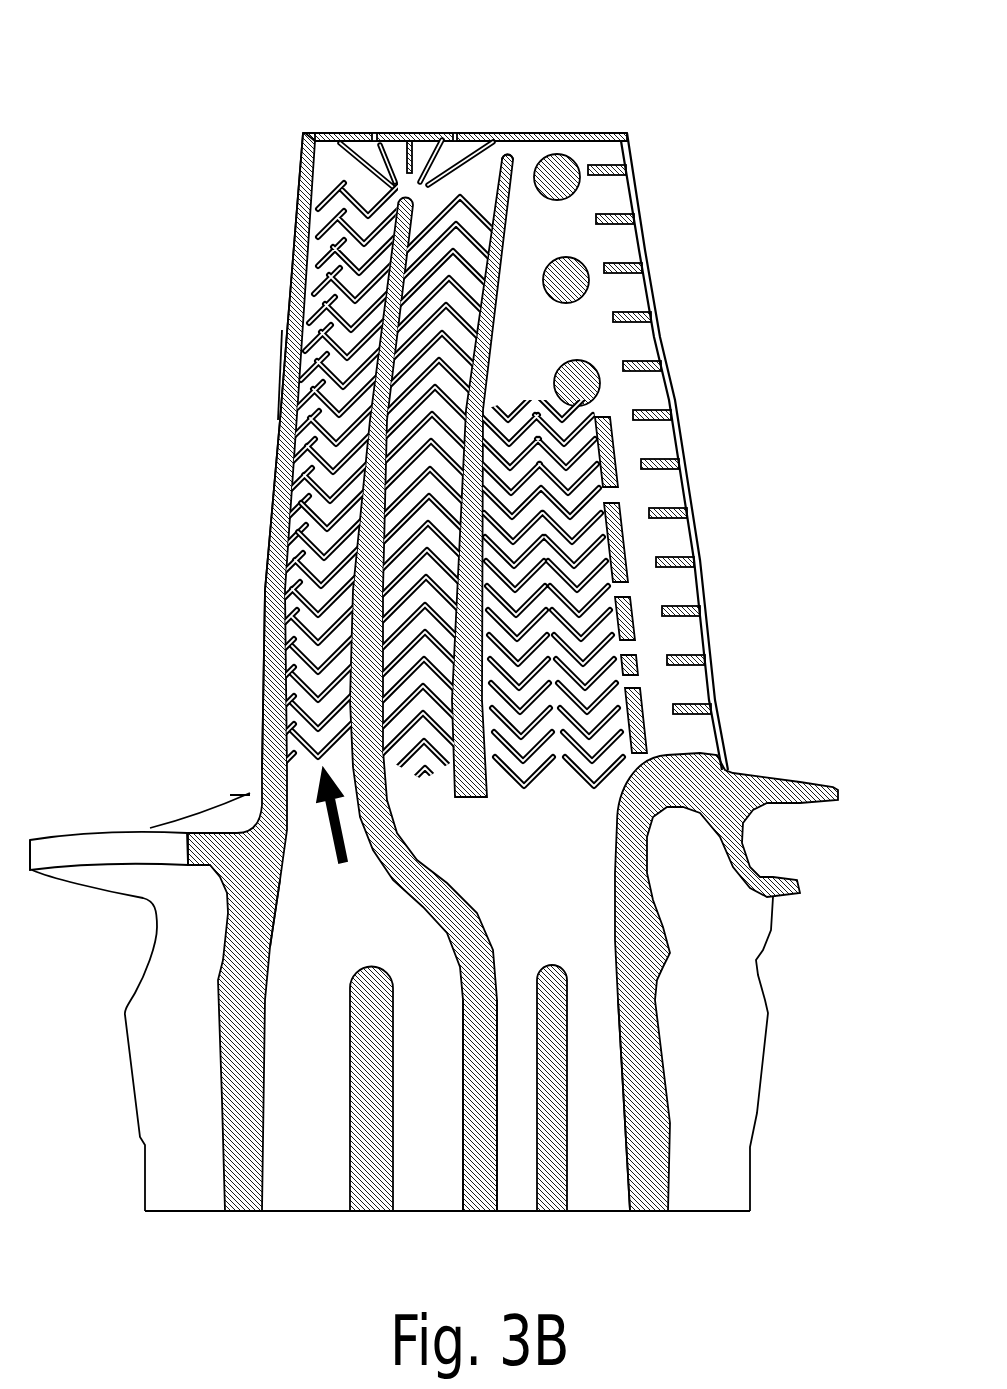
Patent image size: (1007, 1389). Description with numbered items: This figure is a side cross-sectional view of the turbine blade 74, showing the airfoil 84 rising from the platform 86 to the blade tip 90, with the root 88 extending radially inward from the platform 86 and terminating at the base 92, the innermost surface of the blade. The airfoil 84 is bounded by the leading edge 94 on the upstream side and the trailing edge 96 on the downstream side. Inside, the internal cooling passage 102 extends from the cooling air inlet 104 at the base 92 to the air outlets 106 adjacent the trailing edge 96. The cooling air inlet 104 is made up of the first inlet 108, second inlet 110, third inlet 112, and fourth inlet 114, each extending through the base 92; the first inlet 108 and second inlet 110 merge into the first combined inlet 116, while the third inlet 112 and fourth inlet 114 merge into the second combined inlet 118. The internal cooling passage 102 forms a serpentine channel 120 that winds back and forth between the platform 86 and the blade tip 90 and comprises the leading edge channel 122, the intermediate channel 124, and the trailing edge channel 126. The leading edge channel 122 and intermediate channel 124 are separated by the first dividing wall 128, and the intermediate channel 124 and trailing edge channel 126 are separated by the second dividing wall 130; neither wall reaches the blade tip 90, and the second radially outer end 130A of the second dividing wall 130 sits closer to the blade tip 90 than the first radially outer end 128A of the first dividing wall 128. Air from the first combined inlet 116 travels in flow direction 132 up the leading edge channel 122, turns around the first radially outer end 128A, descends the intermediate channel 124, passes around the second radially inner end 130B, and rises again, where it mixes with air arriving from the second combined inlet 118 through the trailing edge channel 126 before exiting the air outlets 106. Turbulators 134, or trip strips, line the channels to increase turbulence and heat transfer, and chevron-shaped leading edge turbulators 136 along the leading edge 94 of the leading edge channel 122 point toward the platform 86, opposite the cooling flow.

The turbine blade 74 is at (134, 142).
The airfoil 84 is at (300, 212).
The platform 86 is at (183, 810).
The root 88 is at (730, 1070).
The blade tip 90 is at (340, 133).
The base 92 is at (197, 1217).
The leading edge 94 is at (265, 633).
The trailing edge 96 is at (690, 470).
The internal cooling passage 102 is at (300, 290).
The cooling air inlet 104 is at (480, 1238).
The air outlets 106 is at (662, 338).
The first inlet 108 is at (292, 1045).
The second inlet 110 is at (425, 1110).
The third inlet 112 is at (515, 1180).
The fourth inlet 114 is at (598, 1147).
The first combined inlet 116 is at (313, 930).
The second combined inlet 118 is at (587, 943).
The serpentine channel 120 is at (572, 158).
The leading edge channel 122 is at (333, 688).
The intermediate channel 124 is at (447, 712).
The trailing edge channel 126 is at (613, 645).
The first dividing wall 128 is at (365, 563).
The first radially outer end 128A is at (405, 197).
The second dividing wall 130 is at (467, 607).
The second radially outer end 130A is at (497, 190).
The second radially inner end 130B is at (467, 797).
The flow direction 132 is at (333, 838).
The turbulators 134 is at (478, 312).
The leading edge turbulators 136 is at (302, 460).